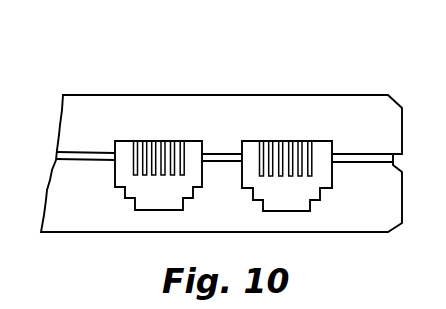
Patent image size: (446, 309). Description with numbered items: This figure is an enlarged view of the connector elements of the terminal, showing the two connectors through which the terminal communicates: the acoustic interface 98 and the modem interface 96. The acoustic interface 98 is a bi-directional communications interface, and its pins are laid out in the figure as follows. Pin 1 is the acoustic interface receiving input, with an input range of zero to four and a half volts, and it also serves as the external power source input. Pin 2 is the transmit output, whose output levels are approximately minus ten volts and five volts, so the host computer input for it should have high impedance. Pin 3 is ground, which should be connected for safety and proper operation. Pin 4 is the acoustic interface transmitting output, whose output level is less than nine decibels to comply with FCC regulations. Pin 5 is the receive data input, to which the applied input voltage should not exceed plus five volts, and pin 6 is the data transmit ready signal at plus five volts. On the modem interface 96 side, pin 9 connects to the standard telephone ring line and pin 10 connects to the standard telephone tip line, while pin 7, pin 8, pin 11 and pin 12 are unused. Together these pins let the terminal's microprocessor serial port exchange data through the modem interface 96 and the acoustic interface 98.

The pin 1 is at (136, 141).
The pin 2 is at (145, 141).
The pin 3 is at (154, 141).
The pin 4 is at (163, 141).
The pin 5 is at (172, 141).
The pin 6 is at (182, 141).
The pin 7 is at (262, 141).
The pin 8 is at (271, 141).
The pin 9 is at (281, 141).
The pin 10 is at (291, 141).
The pin 11 is at (300, 141).
The pin 12 is at (310, 141).
The modem interface 96 is at (332, 188).
The acoustic interface 98 is at (115, 187).